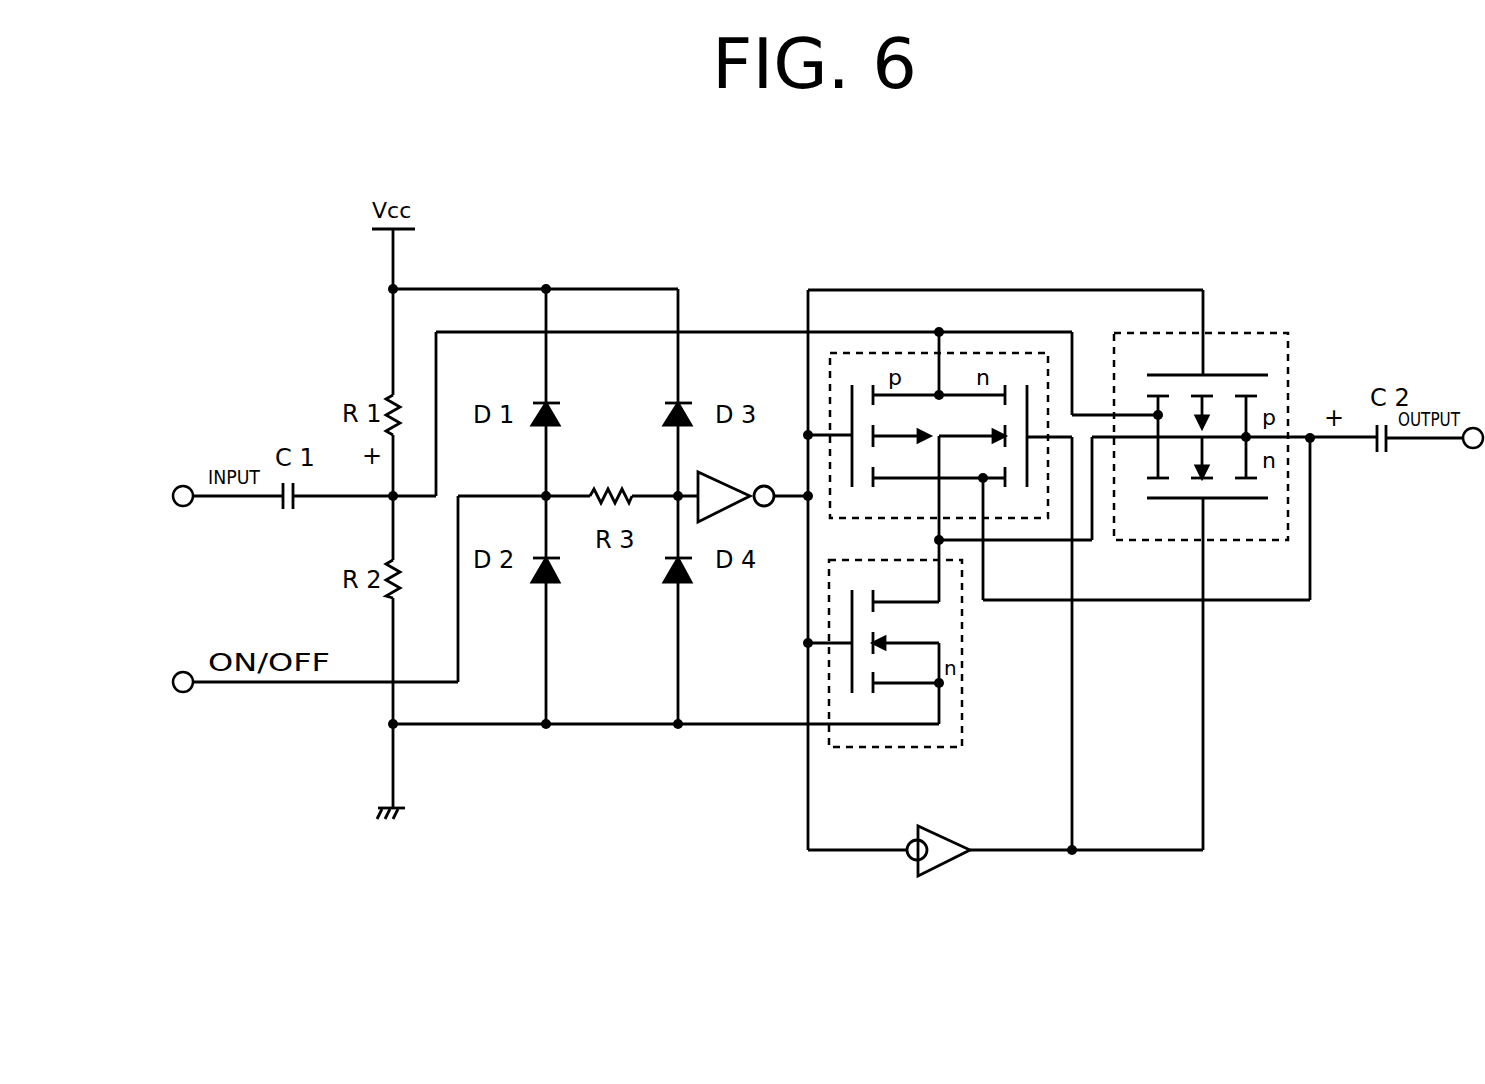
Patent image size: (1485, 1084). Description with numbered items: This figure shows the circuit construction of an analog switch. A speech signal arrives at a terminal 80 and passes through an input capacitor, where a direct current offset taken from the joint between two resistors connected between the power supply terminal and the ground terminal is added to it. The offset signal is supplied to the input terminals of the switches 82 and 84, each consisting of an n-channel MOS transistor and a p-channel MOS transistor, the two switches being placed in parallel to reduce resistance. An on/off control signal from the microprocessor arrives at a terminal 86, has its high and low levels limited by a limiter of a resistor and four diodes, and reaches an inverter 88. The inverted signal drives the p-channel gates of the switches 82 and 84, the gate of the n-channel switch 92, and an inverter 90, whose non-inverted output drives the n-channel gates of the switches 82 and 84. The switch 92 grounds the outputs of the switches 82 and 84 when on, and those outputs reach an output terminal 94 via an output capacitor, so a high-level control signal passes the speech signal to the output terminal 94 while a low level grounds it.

The terminal 80 is at (183, 486).
The switch 82 is at (983, 353).
The switch 84 is at (1241, 333).
The terminal 86 is at (183, 692).
The inverter 88 is at (733, 452).
The inverter 90 is at (948, 837).
The switch 92 is at (962, 643).
The output terminal 94 is at (1473, 448).